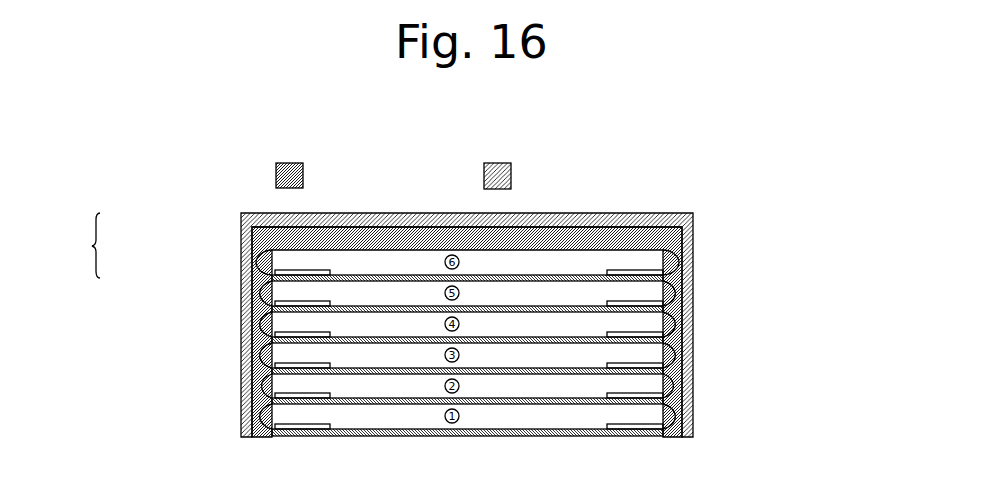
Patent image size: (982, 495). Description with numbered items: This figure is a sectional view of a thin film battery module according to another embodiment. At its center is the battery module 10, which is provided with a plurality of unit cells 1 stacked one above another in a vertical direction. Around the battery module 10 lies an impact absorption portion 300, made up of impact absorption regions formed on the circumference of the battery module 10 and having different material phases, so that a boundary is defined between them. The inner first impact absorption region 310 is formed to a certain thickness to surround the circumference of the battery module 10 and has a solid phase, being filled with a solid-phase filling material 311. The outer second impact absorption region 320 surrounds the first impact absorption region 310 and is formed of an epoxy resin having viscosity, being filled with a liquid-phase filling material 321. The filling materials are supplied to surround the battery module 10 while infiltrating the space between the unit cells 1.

The unit cell 1 is at (580, 389).
The battery module 10 is at (630, 418).
The impact absorption portion 300 is at (81, 245).
The first impact absorption region 310 is at (259, 269).
The solid-phase filling material 311 is at (305, 173).
The second impact absorption region 320 is at (246, 218).
The liquid-phase filling material 321 is at (513, 173).